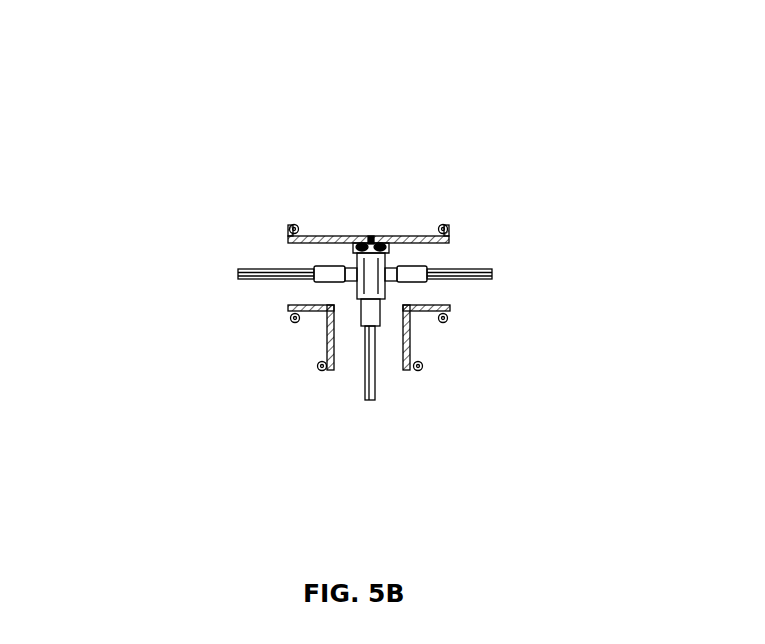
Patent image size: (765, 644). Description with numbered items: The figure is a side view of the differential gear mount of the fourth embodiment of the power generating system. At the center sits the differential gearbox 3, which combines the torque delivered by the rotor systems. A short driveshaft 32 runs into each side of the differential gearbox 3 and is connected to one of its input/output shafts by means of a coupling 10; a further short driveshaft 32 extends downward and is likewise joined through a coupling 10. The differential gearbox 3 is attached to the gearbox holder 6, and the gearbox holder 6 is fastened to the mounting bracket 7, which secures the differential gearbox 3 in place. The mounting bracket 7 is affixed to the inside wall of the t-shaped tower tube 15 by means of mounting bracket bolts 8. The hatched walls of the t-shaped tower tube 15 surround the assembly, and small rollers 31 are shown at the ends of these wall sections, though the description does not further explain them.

The differential gearbox 3 is at (407, 262).
The gearbox holder 6 is at (384, 242).
The mounting bracket 7 is at (371, 240).
The mounting bracket bolts 8 is at (388, 243).
The coupling 10 is at (318, 270).
The t-shaped tower tube 15 is at (323, 240).
The roller 31 is at (290, 230).
The short driveshaft 32 is at (238, 274).